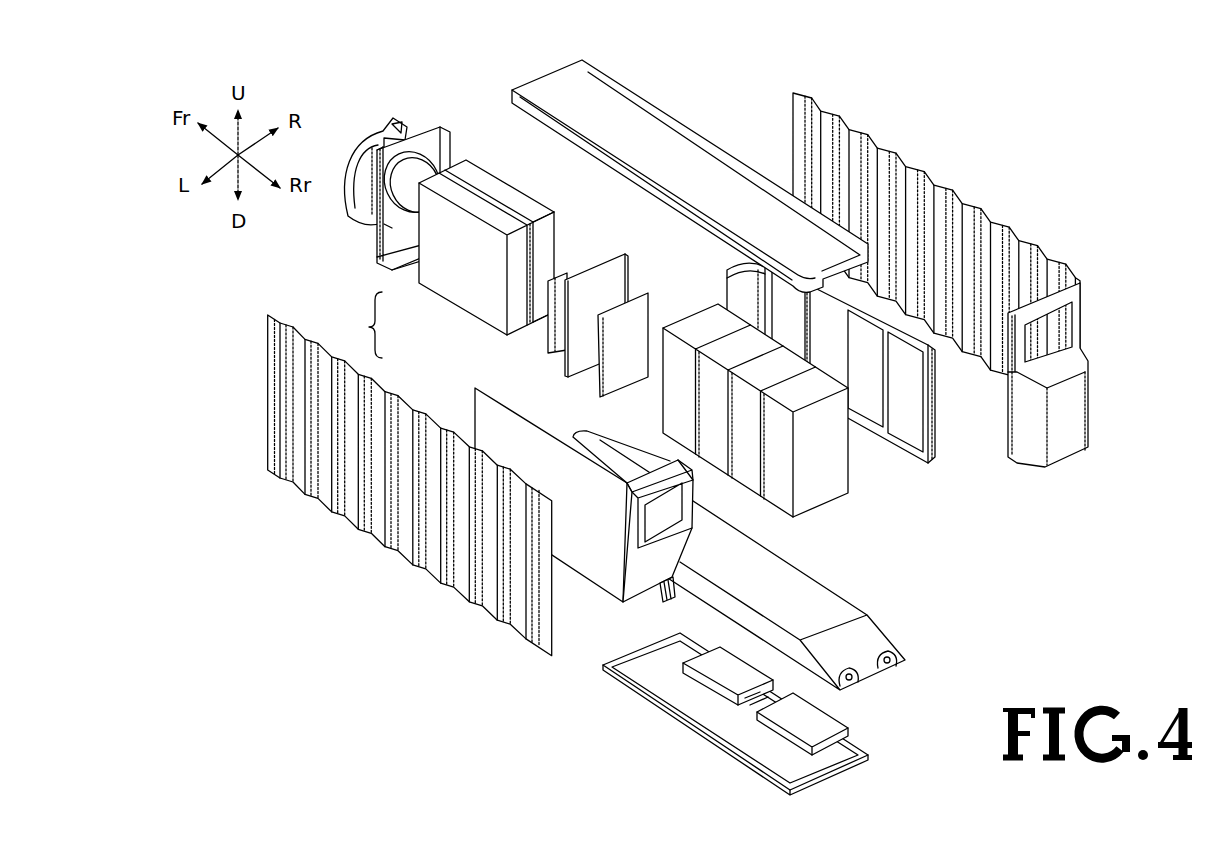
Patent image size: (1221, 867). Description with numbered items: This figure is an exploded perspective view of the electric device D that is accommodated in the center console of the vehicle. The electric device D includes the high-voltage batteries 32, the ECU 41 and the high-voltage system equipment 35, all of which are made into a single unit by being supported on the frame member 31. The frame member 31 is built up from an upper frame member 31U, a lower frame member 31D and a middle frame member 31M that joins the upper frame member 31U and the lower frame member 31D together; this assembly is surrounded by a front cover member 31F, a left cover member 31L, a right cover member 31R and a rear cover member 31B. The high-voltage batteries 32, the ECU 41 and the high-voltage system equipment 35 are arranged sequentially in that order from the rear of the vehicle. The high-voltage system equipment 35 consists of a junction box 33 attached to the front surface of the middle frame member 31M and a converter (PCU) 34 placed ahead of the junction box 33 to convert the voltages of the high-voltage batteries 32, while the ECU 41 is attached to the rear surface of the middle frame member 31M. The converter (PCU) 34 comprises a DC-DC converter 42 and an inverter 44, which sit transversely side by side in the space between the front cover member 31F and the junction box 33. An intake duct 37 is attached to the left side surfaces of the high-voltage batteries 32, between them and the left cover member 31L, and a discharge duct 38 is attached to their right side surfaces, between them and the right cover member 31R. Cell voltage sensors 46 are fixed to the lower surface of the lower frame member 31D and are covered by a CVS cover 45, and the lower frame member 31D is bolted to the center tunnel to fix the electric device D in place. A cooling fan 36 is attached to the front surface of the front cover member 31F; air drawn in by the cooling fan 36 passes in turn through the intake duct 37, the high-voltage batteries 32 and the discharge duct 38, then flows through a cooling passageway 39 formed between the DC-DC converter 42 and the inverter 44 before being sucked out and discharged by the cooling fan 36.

The frame member 31 is at (980, 280).
The rear cover member 31B is at (1074, 412).
The lower frame member 31D is at (863, 642).
The front cover member 31F is at (427, 143).
The left cover member 31L is at (282, 398).
The middle frame member 31M is at (617, 277).
The right cover member 31R is at (937, 190).
The upper frame member 31U is at (690, 157).
The high-voltage batteries 32 is at (777, 425).
The junction box 33 is at (548, 302).
The converter (PCU) 34 is at (462, 270).
The high-voltage system equipment 35 is at (363, 325).
The cooling fan 36 is at (383, 132).
The intake duct 37 is at (597, 560).
The discharge duct 38 is at (935, 408).
The cooling passageway 39 is at (472, 187).
The ECU 41 is at (617, 380).
The DC-DC converter 42 is at (513, 203).
The inverter 44 is at (437, 232).
The CVS cover 45 is at (765, 757).
The cell voltage sensors (CVS) 46 is at (790, 722).
The electric device D is at (980, 259).